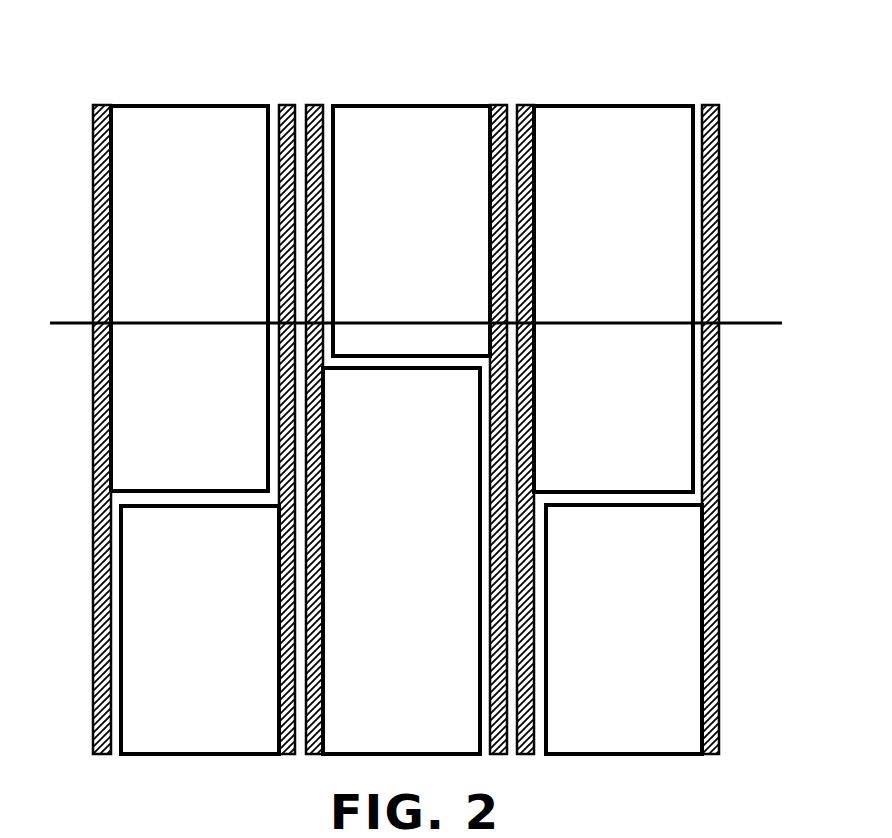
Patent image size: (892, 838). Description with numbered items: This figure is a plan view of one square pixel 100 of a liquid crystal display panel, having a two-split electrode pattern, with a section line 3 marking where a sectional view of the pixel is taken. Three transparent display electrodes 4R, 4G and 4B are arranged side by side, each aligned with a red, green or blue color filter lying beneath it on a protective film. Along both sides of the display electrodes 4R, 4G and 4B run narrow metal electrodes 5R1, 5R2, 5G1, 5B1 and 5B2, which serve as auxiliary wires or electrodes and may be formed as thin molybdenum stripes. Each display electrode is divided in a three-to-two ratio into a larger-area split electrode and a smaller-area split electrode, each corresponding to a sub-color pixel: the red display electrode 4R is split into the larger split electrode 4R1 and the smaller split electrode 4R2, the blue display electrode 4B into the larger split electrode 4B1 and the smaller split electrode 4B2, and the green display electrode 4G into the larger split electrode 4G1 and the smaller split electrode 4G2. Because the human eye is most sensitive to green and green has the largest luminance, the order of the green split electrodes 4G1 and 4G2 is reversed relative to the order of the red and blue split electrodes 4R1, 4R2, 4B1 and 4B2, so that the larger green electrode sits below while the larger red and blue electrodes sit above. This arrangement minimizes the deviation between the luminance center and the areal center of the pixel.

The plasma display panel 100 is at (460, 377).
The transparent display electrode 4R is at (195, 377).
The transparent display electrode 4G is at (406, 377).
The transparent display electrode 4B is at (618, 377).
The larger-area split electrode 4R1 is at (189, 298).
The smaller-area split electrode 4R2 is at (200, 630).
The larger-area split electrode 4G1 is at (401, 561).
The smaller-area split electrode 4G2 is at (411, 231).
The larger-area split electrode 4B1 is at (613, 299).
The smaller-area split electrode 4B2 is at (624, 629).
The metal electrode 5R1 is at (103, 104).
The metal electrode 5R2 is at (287, 104).
The metal electrode 5G1 is at (316, 104).
The metal electrode 5B1 is at (524, 104).
The metal electrode 5B2 is at (498, 104).
The section line 3— 3 is at (417, 324).